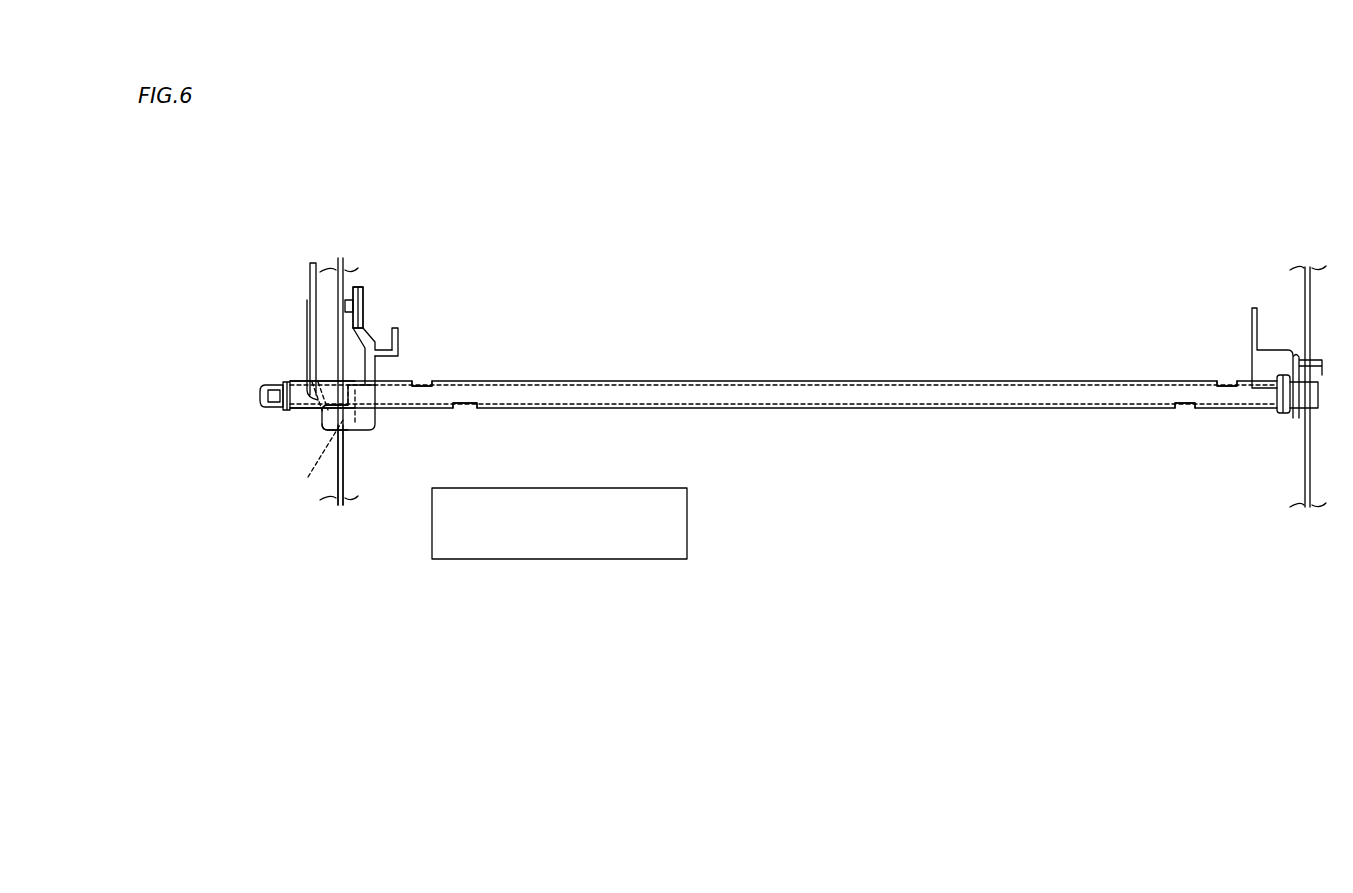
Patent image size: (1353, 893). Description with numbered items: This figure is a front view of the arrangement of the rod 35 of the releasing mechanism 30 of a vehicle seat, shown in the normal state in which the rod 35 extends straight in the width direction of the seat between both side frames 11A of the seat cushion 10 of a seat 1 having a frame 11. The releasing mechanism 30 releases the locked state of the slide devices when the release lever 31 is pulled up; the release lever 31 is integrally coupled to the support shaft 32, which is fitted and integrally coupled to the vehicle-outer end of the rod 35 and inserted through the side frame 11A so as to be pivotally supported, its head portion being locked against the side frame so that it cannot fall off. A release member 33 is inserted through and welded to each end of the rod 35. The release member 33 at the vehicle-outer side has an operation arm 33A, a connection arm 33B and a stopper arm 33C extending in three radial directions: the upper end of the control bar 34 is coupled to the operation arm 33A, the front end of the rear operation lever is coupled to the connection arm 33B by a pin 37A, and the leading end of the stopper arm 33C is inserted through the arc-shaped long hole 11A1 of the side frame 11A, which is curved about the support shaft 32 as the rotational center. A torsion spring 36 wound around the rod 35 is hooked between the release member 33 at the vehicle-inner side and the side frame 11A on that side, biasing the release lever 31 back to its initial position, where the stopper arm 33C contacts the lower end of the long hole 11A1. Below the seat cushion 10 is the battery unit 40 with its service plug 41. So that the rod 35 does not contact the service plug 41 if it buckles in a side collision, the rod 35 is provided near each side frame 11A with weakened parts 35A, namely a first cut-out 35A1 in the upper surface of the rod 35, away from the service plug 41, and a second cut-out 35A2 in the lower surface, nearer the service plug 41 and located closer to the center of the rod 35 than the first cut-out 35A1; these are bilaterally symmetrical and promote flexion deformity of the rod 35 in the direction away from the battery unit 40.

The seat cushion 10 is at (778, 360).
The image forming apparatus 1 is at (934, 224).
The releasing mechanism 30 is at (434, 245).
The frame 11 is at (344, 257).
The side frame 11A is at (345, 472).
The long hole 11A1 is at (302, 461).
The support shaft 32 is at (292, 368).
The release lever 31 is at (303, 390).
The release member 33 is at (378, 378).
The operation arm 33A is at (834, 324).
The control bar 34 is at (398, 338).
The connection arm 33B is at (362, 288).
The stopper arm 33C is at (330, 426).
The rod 35 is at (802, 392).
The weakened parts 35A is at (612, 315).
The first cut-out 35A1 is at (420, 385).
The second cut-out 35A2 is at (460, 408).
The torsion spring 36 is at (1283, 415).
The pin 37A is at (311, 262).
The battery unit 40 is at (616, 523).
The service plug 41 is at (668, 515).